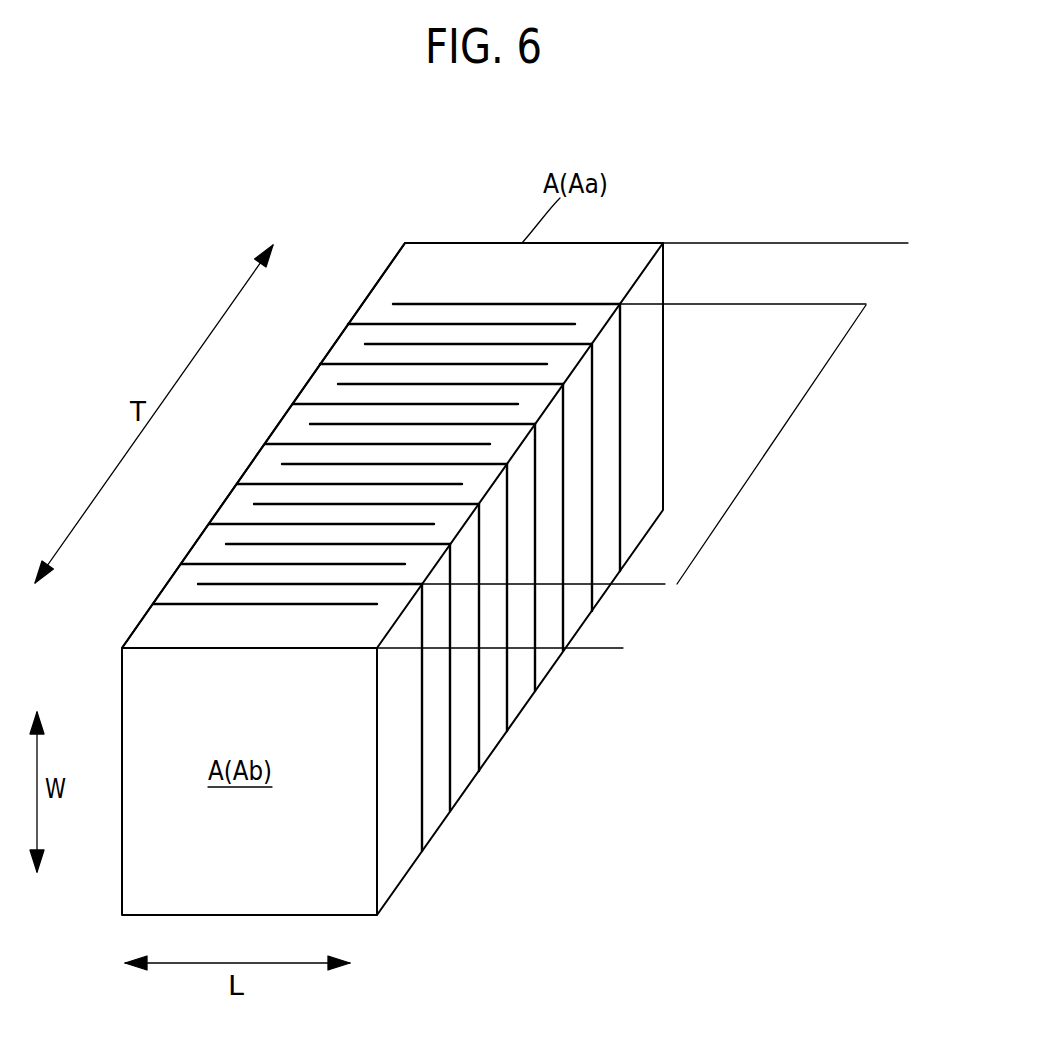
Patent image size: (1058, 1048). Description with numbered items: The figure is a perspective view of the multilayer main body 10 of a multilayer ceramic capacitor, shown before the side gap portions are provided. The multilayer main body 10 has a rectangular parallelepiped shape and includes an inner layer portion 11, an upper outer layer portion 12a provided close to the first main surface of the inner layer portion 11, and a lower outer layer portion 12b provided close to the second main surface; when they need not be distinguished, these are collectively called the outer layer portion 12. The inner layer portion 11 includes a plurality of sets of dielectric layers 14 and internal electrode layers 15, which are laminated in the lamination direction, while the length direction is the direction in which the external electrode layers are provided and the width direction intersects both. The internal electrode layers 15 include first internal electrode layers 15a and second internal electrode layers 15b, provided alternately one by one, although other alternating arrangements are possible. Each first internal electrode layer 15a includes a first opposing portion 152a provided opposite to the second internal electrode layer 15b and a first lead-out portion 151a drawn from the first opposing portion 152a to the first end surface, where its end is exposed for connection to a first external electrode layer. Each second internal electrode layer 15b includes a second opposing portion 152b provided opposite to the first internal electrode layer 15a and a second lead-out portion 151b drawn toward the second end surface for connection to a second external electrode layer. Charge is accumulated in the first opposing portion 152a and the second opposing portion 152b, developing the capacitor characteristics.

The multilayer main body 10 is at (650, 188).
The inner layer portion 11 is at (766, 453).
The outer layer portion 12 is at (662, 450).
The upper outer layer portion 12a is at (783, 283).
The lower outer layer portion 12b is at (567, 620).
The dielectric layer 14 is at (293, 435).
The internal electrode layer 15 is at (420, 494).
The first internal electrode layer 15a is at (430, 158).
The second internal electrode layer 15b is at (580, 792).
The first lead-out portion 151a is at (377, 323).
The first opposing portion 152a is at (410, 312).
The second lead-out portion 151b is at (405, 586).
The second opposing portion 152b is at (337, 587).